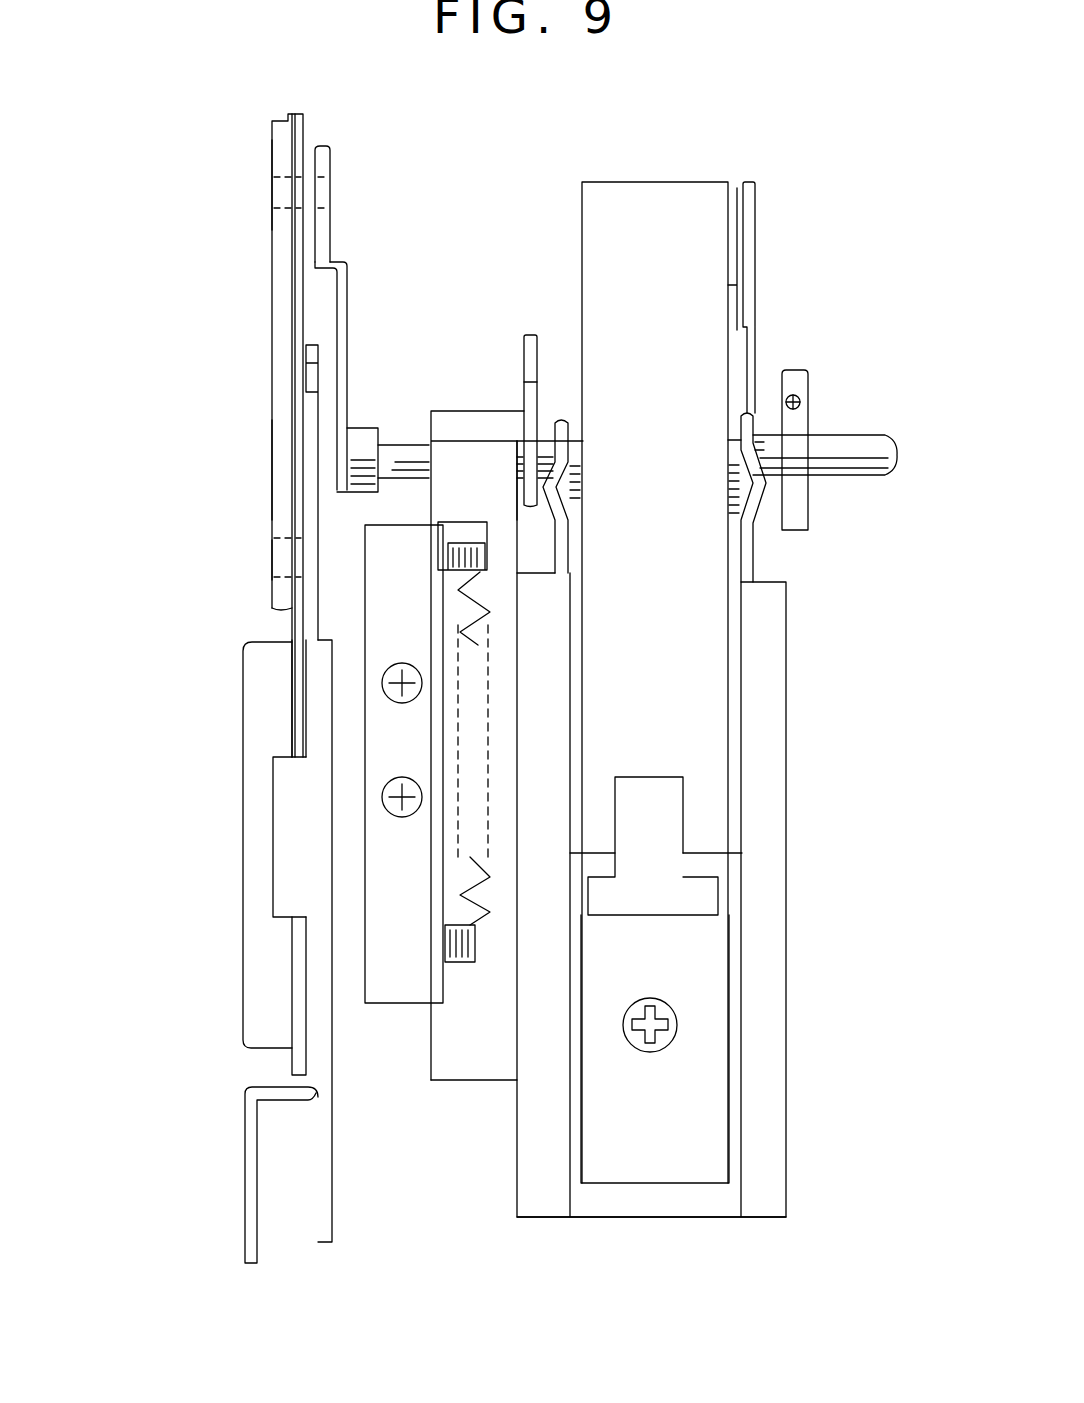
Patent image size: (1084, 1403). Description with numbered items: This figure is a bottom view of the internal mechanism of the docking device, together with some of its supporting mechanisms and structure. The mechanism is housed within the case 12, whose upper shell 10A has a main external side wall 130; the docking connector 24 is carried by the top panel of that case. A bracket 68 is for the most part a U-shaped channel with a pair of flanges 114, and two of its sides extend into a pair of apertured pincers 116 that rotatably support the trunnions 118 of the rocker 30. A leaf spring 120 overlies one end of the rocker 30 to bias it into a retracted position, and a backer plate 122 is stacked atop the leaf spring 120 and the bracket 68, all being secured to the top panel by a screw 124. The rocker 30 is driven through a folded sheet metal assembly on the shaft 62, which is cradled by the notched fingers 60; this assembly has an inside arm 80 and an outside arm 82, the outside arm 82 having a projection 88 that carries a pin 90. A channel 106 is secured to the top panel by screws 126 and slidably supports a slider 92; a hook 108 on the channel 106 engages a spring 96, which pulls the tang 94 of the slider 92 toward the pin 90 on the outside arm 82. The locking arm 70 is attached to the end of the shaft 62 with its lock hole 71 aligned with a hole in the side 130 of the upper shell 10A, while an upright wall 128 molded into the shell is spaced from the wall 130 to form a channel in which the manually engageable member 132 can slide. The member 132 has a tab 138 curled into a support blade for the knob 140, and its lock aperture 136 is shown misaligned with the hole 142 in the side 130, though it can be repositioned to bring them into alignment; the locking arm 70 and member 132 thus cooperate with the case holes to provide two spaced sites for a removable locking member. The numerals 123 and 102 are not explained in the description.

The case 12 is at (272, 152).
The upper shell 10A is at (293, 1002).
The plate section 123 is at (250, 192).
The side of the upper shell 130 is at (274, 462).
The hole 142 is at (250, 575).
The lock aperture 136 is at (283, 390).
The lock hole 71 is at (352, 180).
The locking arm 70 is at (349, 294).
The shaft 62 is at (402, 456).
The pin 90 is at (445, 422).
The slider 92 is at (503, 1083).
The housing wall 102 is at (488, 468).
The outside arm 82 is at (527, 333).
The projection 88 is at (533, 397).
The apertured pincers 116 is at (562, 557).
The trunnions 118 is at (733, 473).
The rocker 30 is at (690, 192).
The docking connector 24 is at (737, 187).
The inside arm 80 is at (757, 298).
The fingers 60 is at (810, 512).
The flanges 114 is at (552, 718).
The leaf spring 120 is at (667, 799).
The backer plate 122 is at (713, 1038).
The screw 124 is at (663, 1050).
The bracket 68 is at (700, 1218).
The channel 106 is at (395, 1000).
The screws 126 is at (403, 787).
The hook 108 is at (463, 550).
The spring 96 is at (467, 582).
The tang 94 is at (462, 965).
The manually engageable member 132 is at (224, 857).
The tab 138 is at (290, 858).
The knob 140 is at (243, 775).
The upright wall 128 is at (338, 1215).